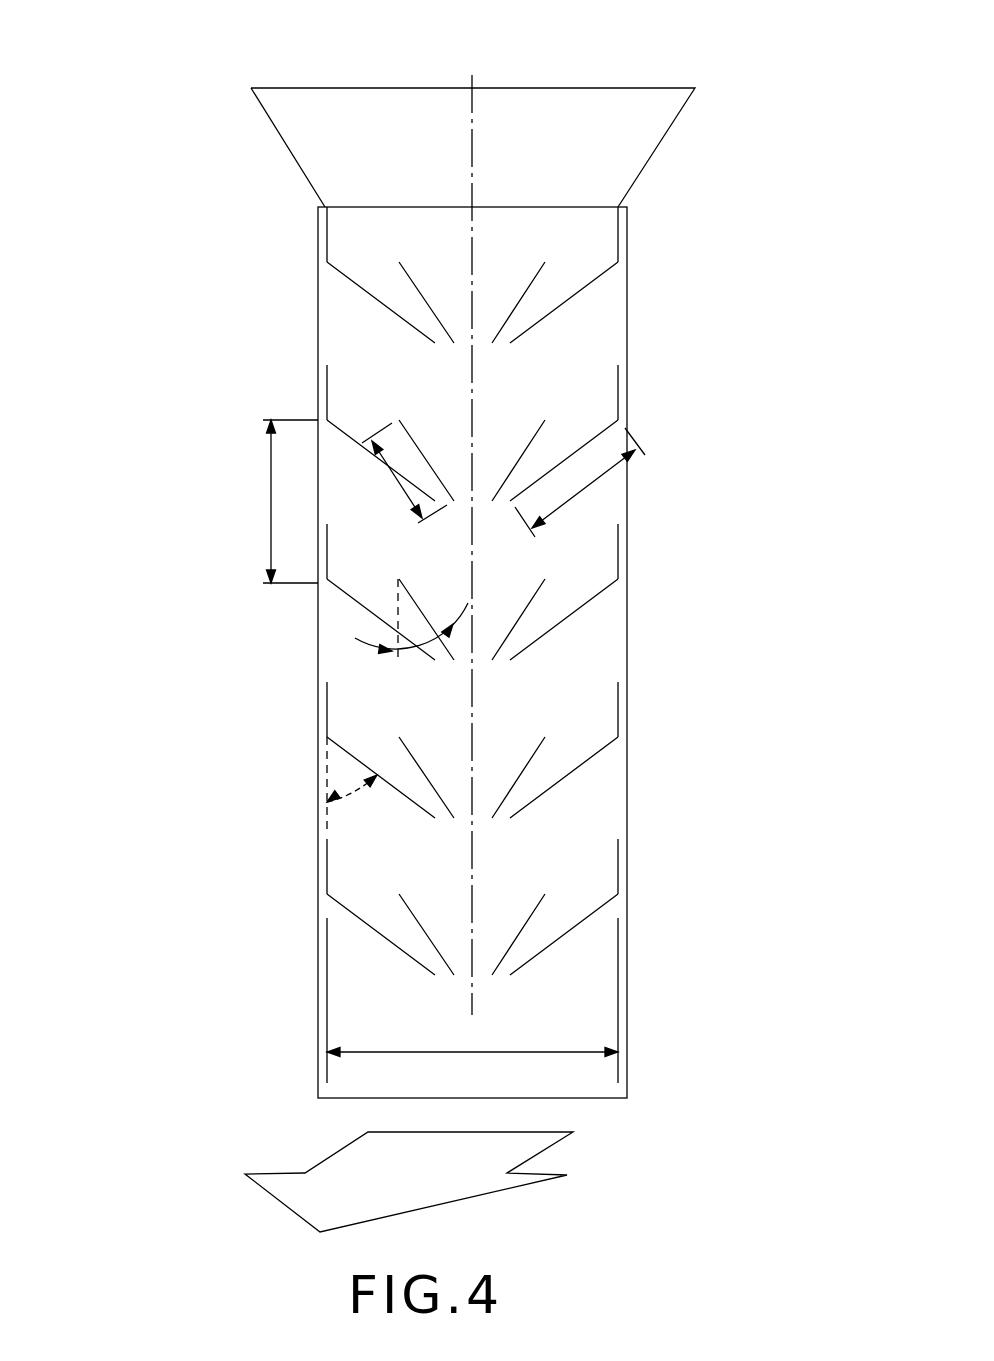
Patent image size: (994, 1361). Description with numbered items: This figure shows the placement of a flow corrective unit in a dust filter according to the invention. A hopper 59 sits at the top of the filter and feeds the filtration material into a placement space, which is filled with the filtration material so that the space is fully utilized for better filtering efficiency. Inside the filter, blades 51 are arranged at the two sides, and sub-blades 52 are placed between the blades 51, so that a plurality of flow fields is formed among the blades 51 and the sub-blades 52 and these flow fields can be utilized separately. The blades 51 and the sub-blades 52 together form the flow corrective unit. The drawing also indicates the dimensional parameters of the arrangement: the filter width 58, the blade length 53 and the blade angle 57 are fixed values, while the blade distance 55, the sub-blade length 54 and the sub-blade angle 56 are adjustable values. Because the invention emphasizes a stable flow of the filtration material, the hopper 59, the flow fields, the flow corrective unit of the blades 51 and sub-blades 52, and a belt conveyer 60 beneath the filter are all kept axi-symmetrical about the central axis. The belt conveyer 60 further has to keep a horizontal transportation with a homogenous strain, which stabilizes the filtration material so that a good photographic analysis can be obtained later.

The blade 51 is at (377, 303).
The sub-blade 52 is at (518, 302).
The blade length 53 is at (585, 490).
The sub-blade length 54 is at (393, 482).
The blade distance 55 is at (270, 498).
The sub-blade angle 56 is at (412, 658).
The blade angle 57 is at (345, 800).
The filter width 58 is at (527, 1050).
The hopper 59 is at (520, 87).
The belt conveyer 60 is at (543, 1153).